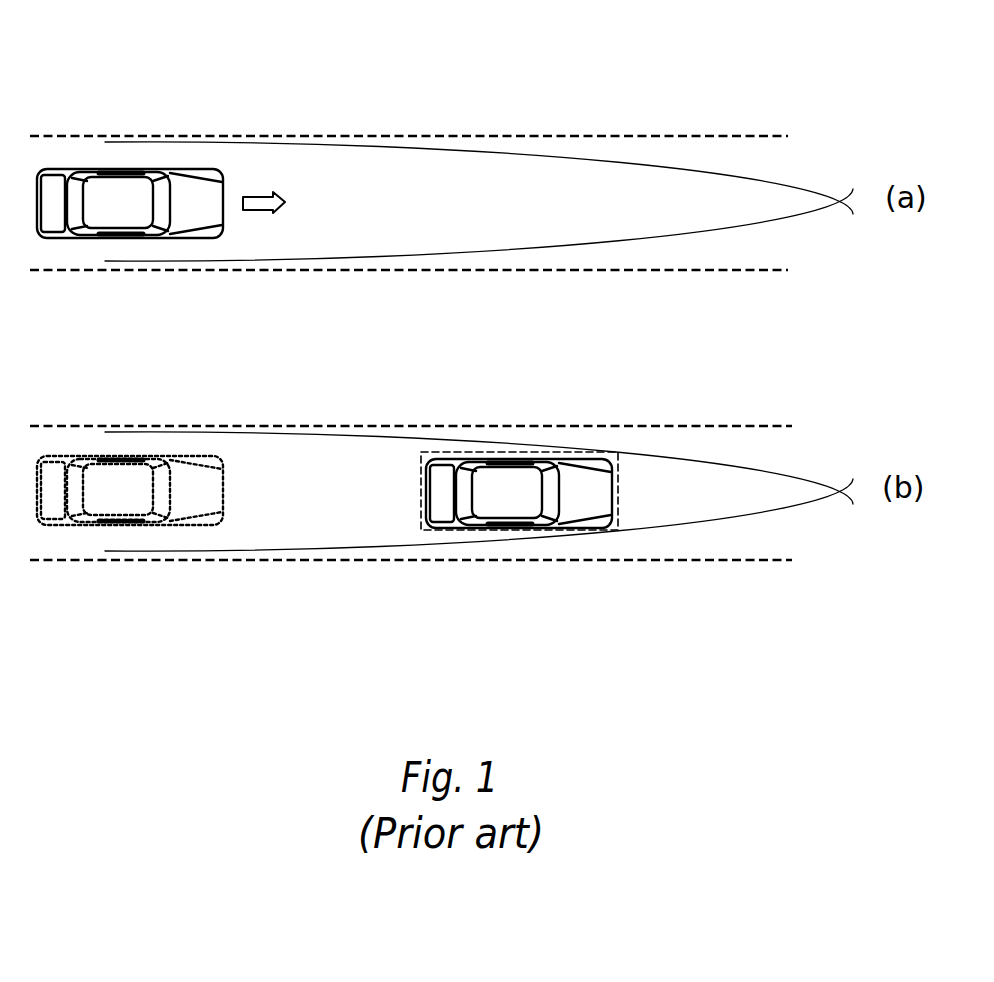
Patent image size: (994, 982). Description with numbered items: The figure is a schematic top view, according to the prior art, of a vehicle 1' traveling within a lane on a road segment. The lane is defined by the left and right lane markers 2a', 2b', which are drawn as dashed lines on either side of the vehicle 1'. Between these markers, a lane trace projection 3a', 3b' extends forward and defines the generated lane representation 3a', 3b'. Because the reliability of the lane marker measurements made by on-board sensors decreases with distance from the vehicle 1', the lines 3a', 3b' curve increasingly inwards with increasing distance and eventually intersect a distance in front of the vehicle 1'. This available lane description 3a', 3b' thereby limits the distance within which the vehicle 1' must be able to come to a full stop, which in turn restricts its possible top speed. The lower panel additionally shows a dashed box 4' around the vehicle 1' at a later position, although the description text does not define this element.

The vehicle 1' is at (324, 280).
The left lane marker 2a' is at (411, 234).
The right lane marker 2b' is at (411, 455).
The lane trace projection 3a' is at (479, 289).
The lane trace projection 3b' is at (479, 404).
The predicted vehicle position box 4' is at (500, 552).